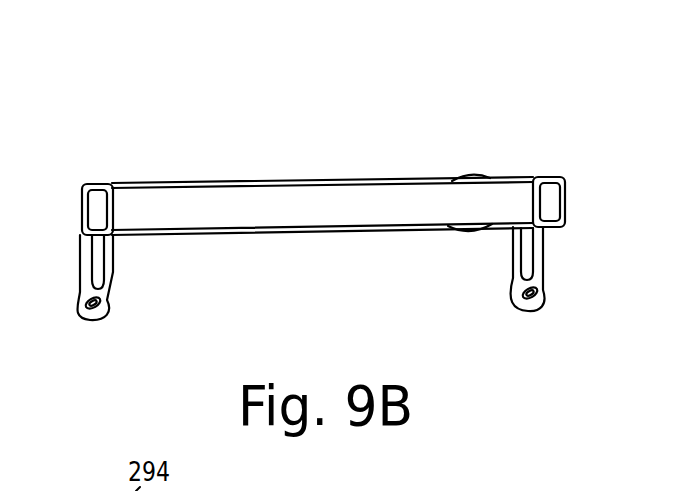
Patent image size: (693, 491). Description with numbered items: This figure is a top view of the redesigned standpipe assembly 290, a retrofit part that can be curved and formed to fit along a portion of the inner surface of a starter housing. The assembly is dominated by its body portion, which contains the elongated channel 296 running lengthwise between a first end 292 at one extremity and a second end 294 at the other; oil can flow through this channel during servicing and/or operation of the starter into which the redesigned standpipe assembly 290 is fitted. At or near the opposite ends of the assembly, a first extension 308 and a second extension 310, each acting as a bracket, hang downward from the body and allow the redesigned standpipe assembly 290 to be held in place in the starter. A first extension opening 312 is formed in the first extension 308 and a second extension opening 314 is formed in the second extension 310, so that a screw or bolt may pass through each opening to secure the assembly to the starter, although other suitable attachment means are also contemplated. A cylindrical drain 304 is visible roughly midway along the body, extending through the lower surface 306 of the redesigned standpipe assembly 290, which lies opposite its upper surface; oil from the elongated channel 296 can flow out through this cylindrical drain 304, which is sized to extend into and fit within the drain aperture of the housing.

The redesigned standpipe assembly 290 is at (405, 88).
The first end 292 is at (100, 178).
The second end 294 is at (546, 172).
The elongated channel 296 is at (561, 203).
The cylindrical drain 304 is at (462, 232).
The lower surface 306 is at (243, 200).
The first extension 308 is at (120, 258).
The second extension 310 is at (547, 258).
The first extension opening 312 is at (99, 305).
The second extension opening 314 is at (533, 312).